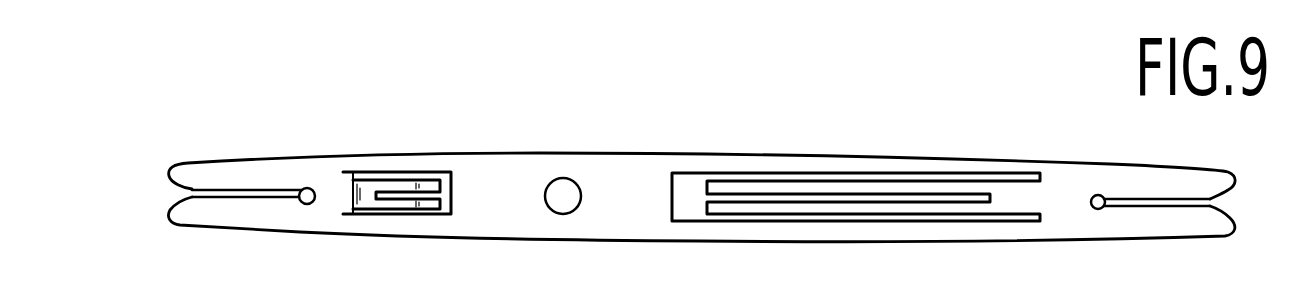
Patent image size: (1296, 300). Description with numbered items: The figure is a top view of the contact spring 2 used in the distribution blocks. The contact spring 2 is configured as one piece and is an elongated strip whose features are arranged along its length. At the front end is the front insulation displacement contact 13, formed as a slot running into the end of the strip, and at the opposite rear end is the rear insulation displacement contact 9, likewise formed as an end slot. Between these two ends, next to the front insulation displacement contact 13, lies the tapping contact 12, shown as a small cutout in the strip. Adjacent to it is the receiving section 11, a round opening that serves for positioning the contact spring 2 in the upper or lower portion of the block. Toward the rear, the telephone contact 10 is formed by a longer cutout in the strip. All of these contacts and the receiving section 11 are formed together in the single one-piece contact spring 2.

The contact spring 2 is at (919, 159).
The rear insulation displacement contact 9 is at (1153, 183).
The telephone contact 10 is at (850, 207).
The receiving section 11 is at (557, 225).
The tapping contact 12 is at (392, 204).
The front insulation displacement contact 13 is at (247, 178).